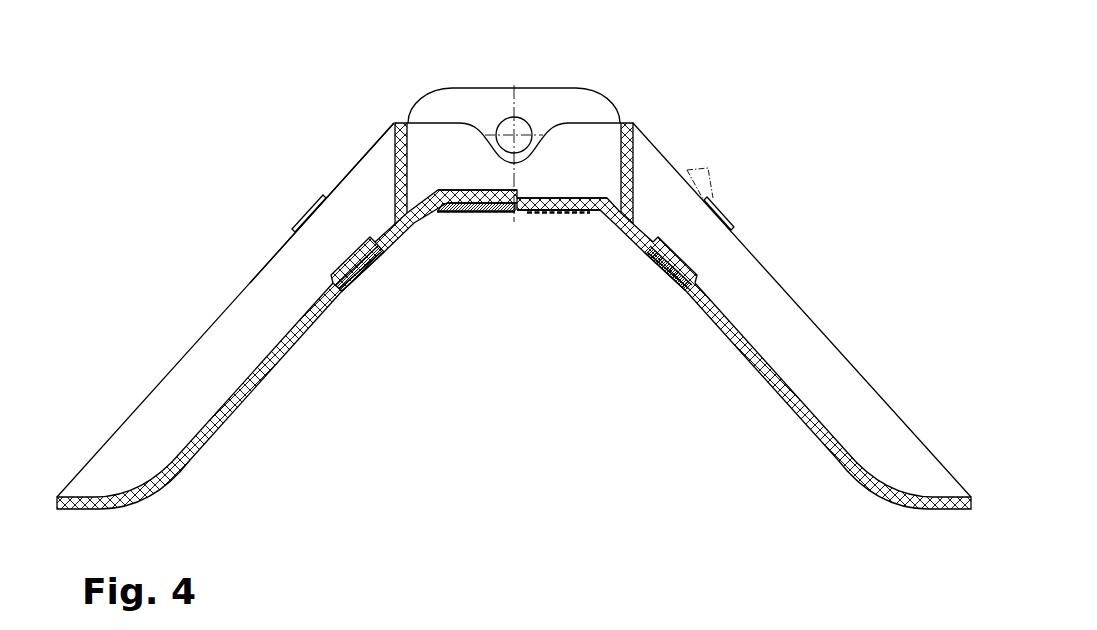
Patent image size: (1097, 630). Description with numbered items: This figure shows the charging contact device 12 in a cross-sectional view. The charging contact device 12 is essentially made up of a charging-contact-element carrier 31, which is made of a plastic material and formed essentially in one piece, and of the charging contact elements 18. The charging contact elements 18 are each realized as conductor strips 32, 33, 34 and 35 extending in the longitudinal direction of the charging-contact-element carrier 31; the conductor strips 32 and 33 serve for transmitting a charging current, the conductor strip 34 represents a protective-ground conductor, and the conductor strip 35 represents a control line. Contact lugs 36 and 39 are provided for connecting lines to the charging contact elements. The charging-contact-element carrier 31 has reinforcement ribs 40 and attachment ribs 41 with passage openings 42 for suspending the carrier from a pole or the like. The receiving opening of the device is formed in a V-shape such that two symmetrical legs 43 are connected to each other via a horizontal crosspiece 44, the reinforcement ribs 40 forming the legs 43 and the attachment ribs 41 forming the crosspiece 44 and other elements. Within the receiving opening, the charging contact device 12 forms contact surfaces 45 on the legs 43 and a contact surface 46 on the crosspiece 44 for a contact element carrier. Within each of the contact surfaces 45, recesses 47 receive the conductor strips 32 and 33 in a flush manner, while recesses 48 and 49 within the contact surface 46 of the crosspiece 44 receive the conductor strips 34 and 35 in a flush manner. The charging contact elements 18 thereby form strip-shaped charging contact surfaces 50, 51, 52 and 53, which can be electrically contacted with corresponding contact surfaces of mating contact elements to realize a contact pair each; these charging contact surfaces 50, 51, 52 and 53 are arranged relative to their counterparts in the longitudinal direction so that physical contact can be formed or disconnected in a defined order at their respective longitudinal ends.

The charging contact device 12 is at (514, 265).
The charging contact elements 18 is at (534, 231).
The charging-contact-element carrier 31 is at (502, 123).
The conductor strip 32 is at (383, 258).
The conductor strip 33 is at (650, 260).
The conductor strip 34 is at (425, 247).
The conductor strip 35 is at (547, 214).
The contact lug 36 is at (734, 222).
The contact lug 39 is at (300, 222).
The reinforcement ribs 40 is at (276, 293).
The attachment ribs 41 is at (575, 107).
The passage openings 42 is at (523, 125).
The legs 43 is at (161, 356).
The crosspiece 44 is at (467, 97).
The contact surfaces 45 is at (206, 433).
The contact surface 46 is at (565, 214).
The recesses 47 is at (351, 298).
The recess 48 is at (468, 230).
The recess 49 is at (554, 231).
The charging contact surface 50 is at (423, 354).
The charging contact surface 51 is at (585, 214).
The charging contact surface 52 is at (480, 212).
The charging contact surface 53 is at (566, 214).